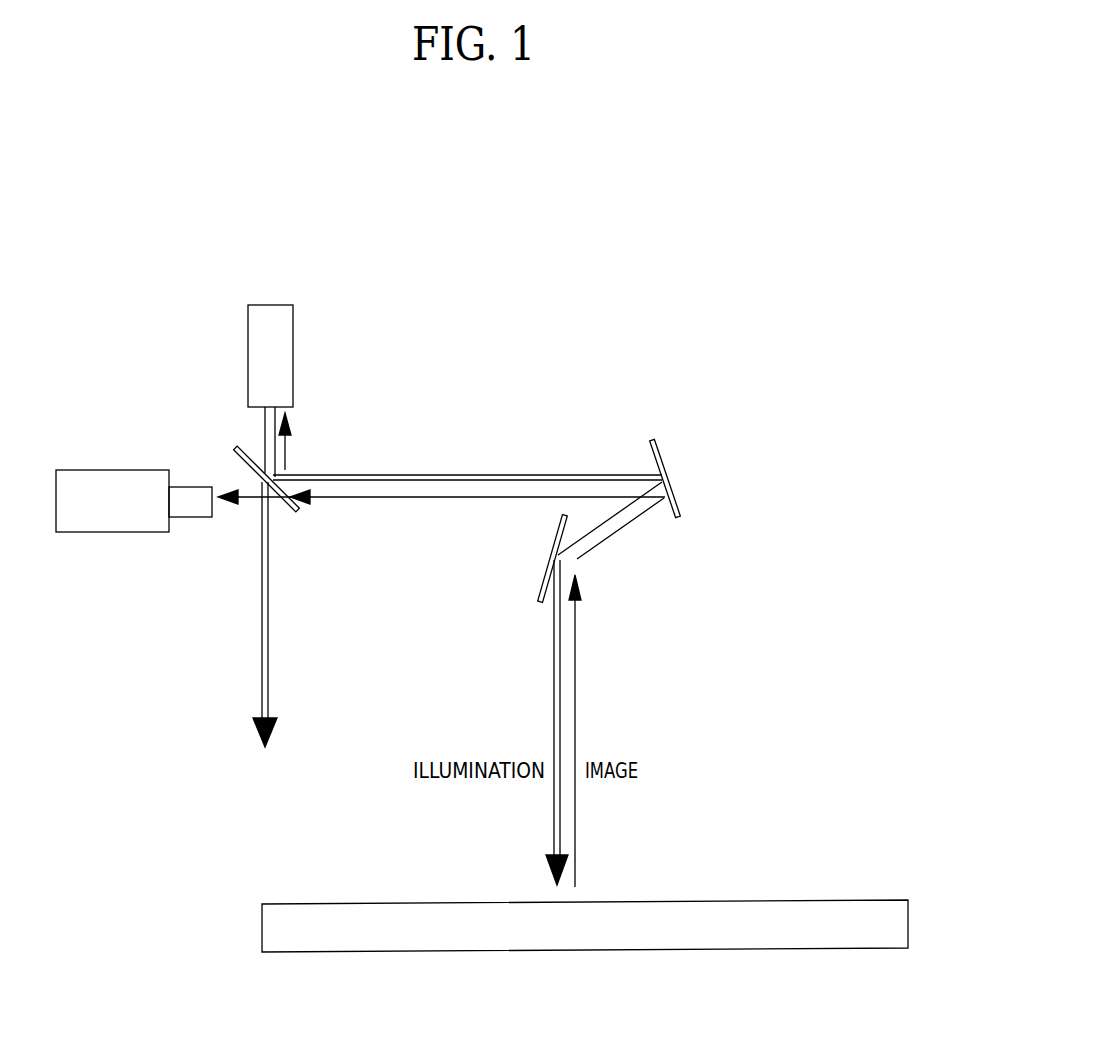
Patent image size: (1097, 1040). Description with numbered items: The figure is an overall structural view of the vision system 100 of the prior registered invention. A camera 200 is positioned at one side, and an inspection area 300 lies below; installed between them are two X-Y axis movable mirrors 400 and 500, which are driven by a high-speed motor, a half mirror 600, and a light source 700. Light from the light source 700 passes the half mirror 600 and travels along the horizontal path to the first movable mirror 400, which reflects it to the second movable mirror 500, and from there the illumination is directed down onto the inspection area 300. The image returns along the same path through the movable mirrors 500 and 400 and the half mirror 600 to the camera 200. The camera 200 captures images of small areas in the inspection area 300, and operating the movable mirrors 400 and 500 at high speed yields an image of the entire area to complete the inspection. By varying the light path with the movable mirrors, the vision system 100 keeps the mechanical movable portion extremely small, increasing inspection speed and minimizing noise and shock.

The vision system 100 is at (197, 280).
The camera 200 is at (115, 470).
The inspection area 300 is at (877, 905).
The X-Y axis movable mirror 400 is at (665, 452).
The X-Y axis movable mirror 500 is at (556, 538).
The half mirror 600 is at (318, 456).
The light source 700 is at (295, 355).